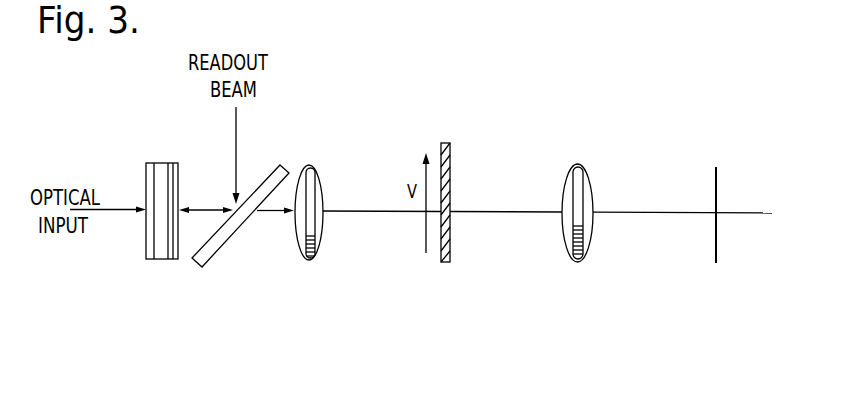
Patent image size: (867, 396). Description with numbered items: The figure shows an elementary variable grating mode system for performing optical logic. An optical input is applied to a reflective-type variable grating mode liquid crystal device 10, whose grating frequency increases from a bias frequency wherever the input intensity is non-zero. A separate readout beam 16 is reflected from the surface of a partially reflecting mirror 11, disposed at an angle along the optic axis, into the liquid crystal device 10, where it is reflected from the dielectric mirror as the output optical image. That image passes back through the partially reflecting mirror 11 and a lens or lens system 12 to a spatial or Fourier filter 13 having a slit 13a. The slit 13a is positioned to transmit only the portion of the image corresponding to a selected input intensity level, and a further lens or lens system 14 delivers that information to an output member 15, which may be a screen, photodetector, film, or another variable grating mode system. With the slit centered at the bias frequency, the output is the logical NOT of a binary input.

The variable grating mode liquid crystal device 10 is at (146, 163).
The partially reflecting mirror 11 is at (280, 165).
The lens or lens system 12 is at (318, 247).
The spatial or Fourier filter 13 is at (447, 143).
The slit 13a is at (448, 185).
The lens or lens system 14 is at (587, 182).
The output member 15 is at (717, 178).
The readout beam 16 is at (236, 148).